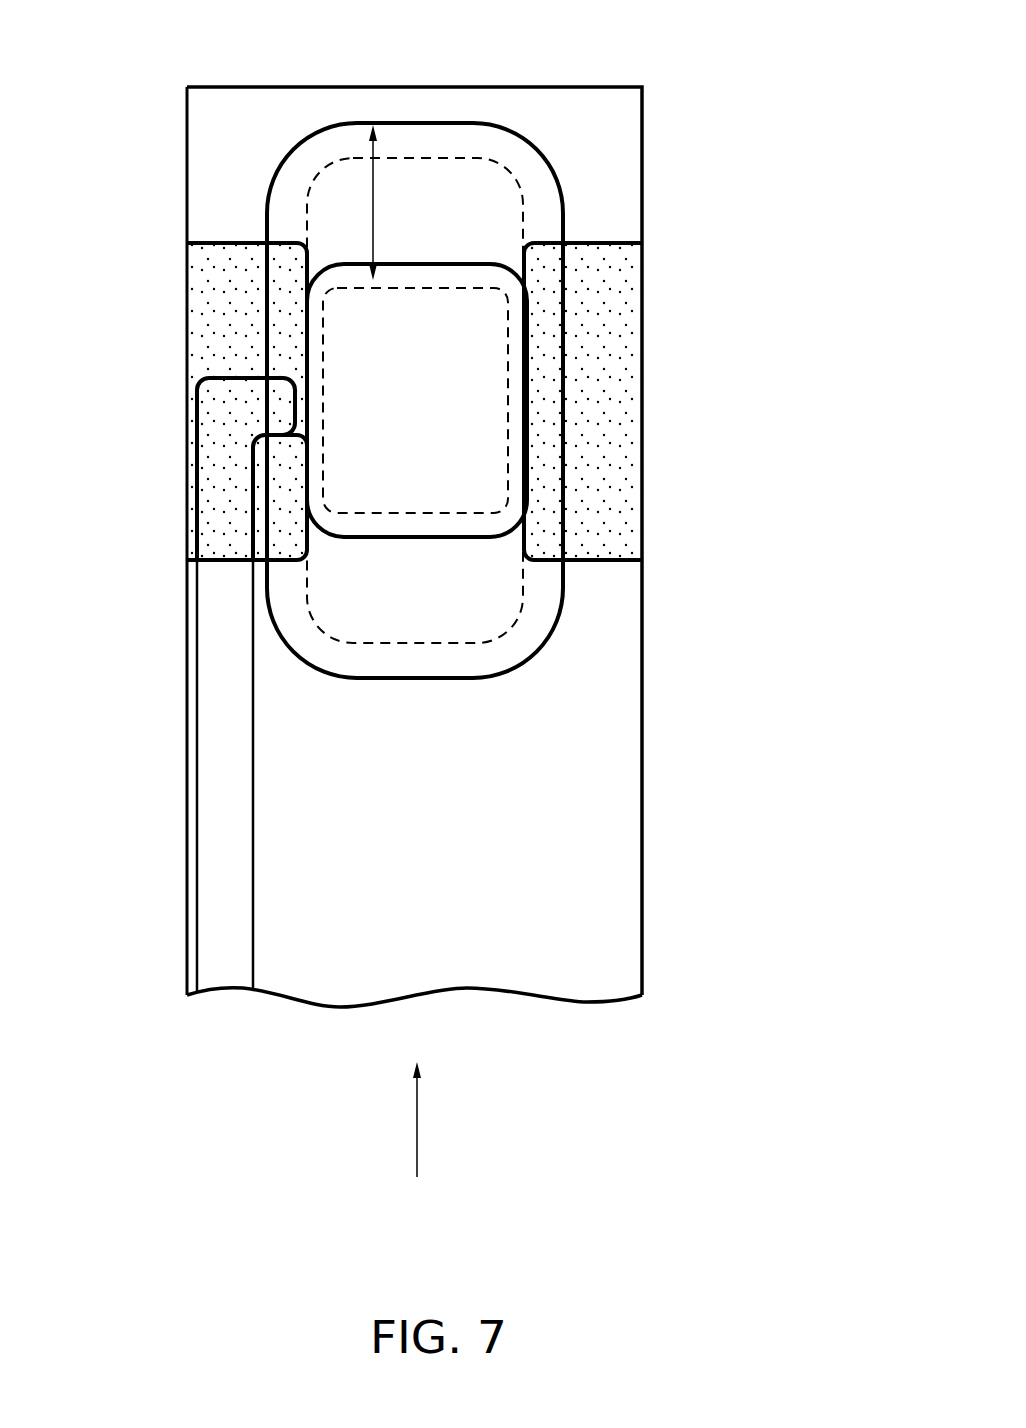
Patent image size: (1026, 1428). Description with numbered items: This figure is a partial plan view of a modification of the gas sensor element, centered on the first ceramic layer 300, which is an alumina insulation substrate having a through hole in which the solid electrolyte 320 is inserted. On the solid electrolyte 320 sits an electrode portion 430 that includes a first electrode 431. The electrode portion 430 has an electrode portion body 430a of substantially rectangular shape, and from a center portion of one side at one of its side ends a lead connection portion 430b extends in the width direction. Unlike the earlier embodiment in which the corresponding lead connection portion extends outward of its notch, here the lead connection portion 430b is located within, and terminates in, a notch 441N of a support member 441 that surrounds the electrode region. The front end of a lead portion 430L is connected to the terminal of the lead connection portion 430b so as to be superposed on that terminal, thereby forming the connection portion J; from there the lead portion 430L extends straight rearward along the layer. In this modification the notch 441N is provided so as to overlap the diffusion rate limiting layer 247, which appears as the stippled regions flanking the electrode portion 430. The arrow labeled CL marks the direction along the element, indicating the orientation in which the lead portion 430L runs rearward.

The first ceramic layer 300 is at (593, 101).
The solid electrolyte 320 is at (541, 158).
The electrode portion 430 is at (584, 366).
The electrode portion body 430a is at (467, 262).
The lead connection portion 430b is at (277, 380).
The lead portion 430L is at (242, 918).
The first electrode 431 is at (279, 734).
The support member 441 is at (373, 200).
The notch 441N is at (267, 433).
The diffusion rate limiting layer 247 is at (225, 308).
The connection portion J is at (277, 412).
The center line direction CL is at (415, 1147).